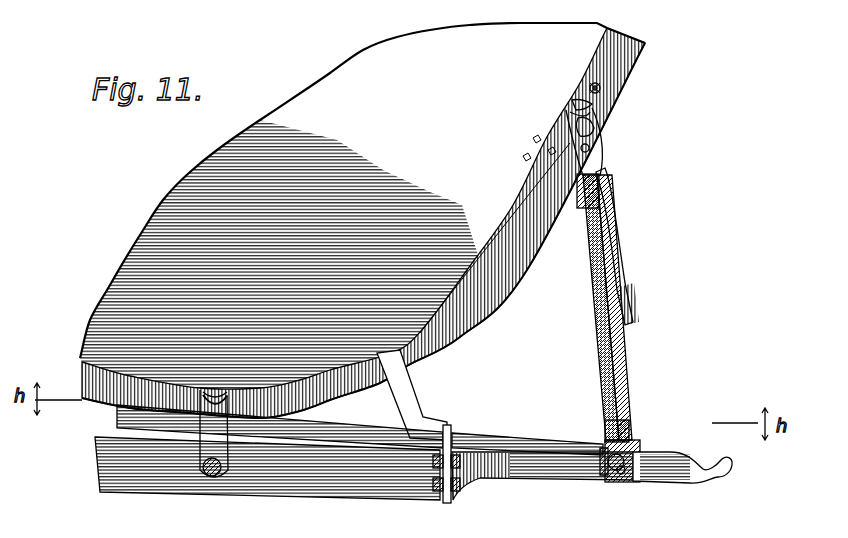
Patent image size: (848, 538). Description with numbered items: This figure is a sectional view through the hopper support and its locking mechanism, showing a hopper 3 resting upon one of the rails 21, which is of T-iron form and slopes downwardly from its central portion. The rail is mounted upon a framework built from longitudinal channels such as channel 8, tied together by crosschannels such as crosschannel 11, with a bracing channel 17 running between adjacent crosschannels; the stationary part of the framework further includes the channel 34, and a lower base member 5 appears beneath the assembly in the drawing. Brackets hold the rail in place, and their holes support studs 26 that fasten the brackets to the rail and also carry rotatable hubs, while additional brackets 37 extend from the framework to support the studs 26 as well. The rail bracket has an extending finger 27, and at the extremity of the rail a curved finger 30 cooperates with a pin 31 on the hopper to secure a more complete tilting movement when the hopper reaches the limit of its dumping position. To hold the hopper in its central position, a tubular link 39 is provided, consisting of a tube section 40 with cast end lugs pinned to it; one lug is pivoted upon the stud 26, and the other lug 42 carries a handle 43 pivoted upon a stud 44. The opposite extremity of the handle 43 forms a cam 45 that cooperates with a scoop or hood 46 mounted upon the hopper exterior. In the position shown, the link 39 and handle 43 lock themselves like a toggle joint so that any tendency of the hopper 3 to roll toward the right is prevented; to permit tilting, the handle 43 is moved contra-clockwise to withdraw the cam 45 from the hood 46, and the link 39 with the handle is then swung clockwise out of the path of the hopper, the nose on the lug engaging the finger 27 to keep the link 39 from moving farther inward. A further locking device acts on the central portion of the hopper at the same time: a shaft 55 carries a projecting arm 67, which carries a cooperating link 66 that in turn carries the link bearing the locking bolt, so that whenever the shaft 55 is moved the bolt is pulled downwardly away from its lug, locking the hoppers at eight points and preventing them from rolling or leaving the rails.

The hopper 3 is at (158, 226).
The pin 31 is at (588, 92).
The hood 46 is at (594, 104).
The cam 45 is at (596, 128).
The stud 44 is at (590, 148).
The end lug 42 is at (592, 172).
The handle 43 is at (617, 232).
The link 39 is at (607, 352).
The tube section 40 is at (610, 388).
The channel 34 is at (412, 403).
The rail 21 is at (530, 437).
The base 5 is at (400, 498).
The channel 8 is at (446, 503).
The bracket 37 is at (538, 466).
The crosschannel 11 is at (630, 452).
The bracing channel 17 is at (603, 474).
The finger 27 is at (610, 482).
The stud 26 is at (627, 482).
The curved finger 30 is at (710, 463).
The link 66 is at (218, 396).
The arm 67 is at (210, 438).
The shaft 55 is at (216, 478).